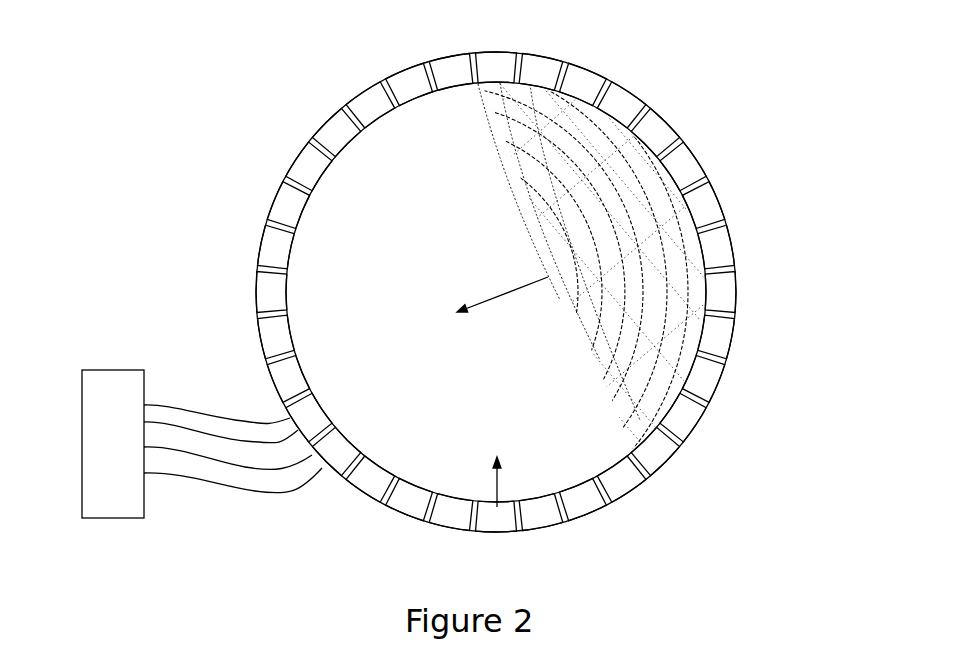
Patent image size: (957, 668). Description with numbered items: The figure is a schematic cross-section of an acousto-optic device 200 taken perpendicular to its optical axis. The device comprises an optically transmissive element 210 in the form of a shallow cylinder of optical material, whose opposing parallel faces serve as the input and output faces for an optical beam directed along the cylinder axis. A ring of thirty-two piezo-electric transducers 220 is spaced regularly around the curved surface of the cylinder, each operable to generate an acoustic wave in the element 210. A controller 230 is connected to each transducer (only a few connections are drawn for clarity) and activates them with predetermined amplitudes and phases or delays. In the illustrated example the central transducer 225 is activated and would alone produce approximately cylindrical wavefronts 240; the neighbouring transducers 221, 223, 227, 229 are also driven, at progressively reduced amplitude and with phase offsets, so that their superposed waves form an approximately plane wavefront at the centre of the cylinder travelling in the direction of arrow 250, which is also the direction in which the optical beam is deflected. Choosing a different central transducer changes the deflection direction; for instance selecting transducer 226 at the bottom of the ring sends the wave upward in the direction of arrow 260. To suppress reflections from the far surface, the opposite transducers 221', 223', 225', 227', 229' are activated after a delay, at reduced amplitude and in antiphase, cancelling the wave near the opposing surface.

The acousto-optic device 200 is at (193, 199).
The optically transmissive element 210 is at (347, 193).
The piezo-electric transducers 220 is at (405, 87).
The transducer 221 is at (727, 145).
The transducer 223 is at (697, 110).
The transducer 225 is at (749, 184).
The transducer 227 is at (766, 226).
The transducer 229 is at (771, 267).
The transducer 221' is at (340, 405).
The transducer 223' is at (371, 445).
The transducer 225' is at (329, 366).
The transducer 227' is at (327, 328).
The transducer 229' is at (329, 285).
The transducer 226 is at (498, 520).
The controller 230 is at (132, 457).
The cylindrical wavefronts 240 is at (603, 348).
The arrow 250 is at (478, 302).
The arrow 260 is at (503, 487).